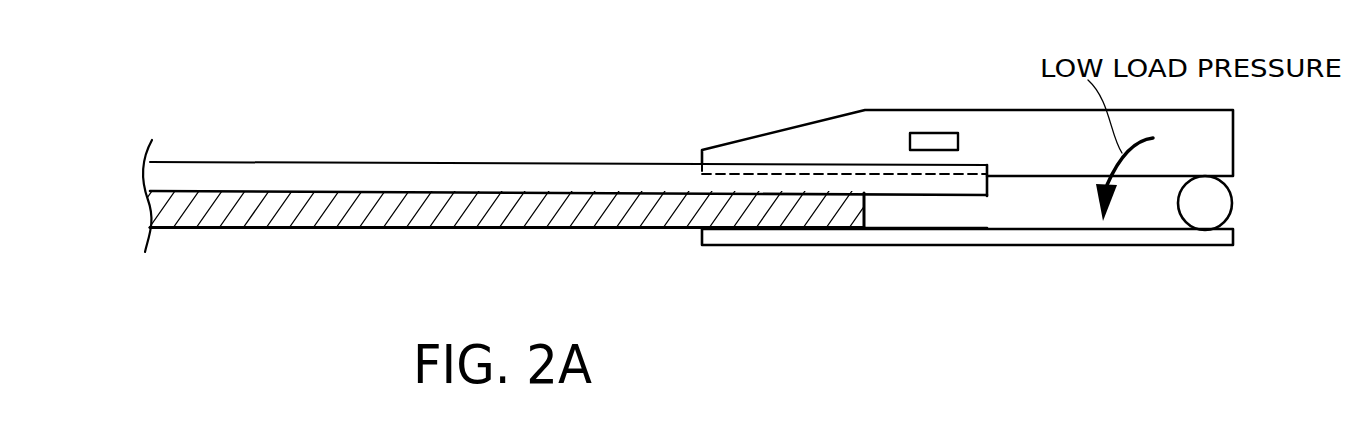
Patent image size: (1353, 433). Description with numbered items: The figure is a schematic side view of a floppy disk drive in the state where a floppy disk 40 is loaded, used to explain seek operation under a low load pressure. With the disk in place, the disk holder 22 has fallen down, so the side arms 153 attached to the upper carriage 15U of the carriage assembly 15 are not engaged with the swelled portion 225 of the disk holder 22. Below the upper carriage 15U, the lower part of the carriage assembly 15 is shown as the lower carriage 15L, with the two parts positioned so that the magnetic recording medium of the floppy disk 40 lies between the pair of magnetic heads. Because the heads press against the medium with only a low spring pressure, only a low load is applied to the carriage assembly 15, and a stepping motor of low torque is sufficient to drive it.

The disk holder 22 is at (207, 181).
The floppy disk 40 is at (220, 220).
The carriage assembly 15 is at (1051, 268).
The upper carriage 15U is at (823, 120).
The lower head portion 15L is at (887, 248).
The side arms 153 is at (933, 132).
The swelled portion 225 is at (933, 185).